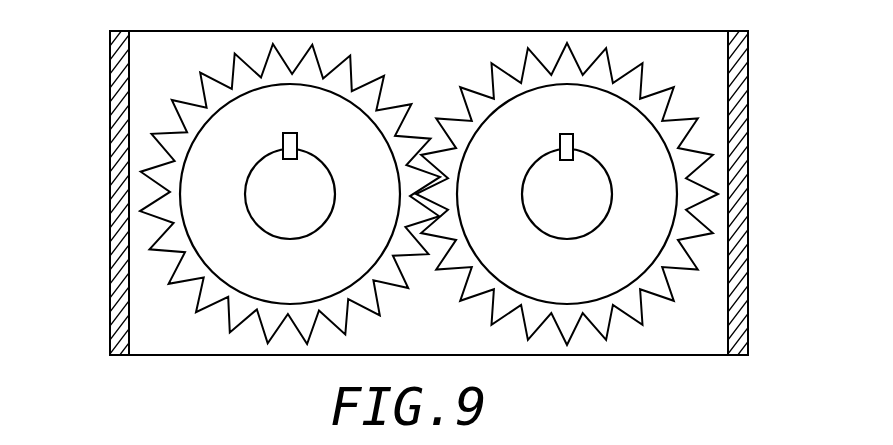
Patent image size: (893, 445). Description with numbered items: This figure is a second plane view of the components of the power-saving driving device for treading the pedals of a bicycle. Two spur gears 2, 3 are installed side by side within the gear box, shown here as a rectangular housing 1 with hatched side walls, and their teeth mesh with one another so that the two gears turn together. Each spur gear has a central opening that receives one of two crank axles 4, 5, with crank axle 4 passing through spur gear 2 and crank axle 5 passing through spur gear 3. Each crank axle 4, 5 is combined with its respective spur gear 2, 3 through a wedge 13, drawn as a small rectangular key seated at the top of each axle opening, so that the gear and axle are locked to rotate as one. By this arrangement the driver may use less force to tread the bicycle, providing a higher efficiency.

The casing 1 is at (748, 42).
The spur gear 2 is at (175, 245).
The spur gear 3 is at (680, 162).
The crank axle 4 is at (265, 192).
The crank axle 5 is at (592, 193).
The wedge 13 is at (283, 146).